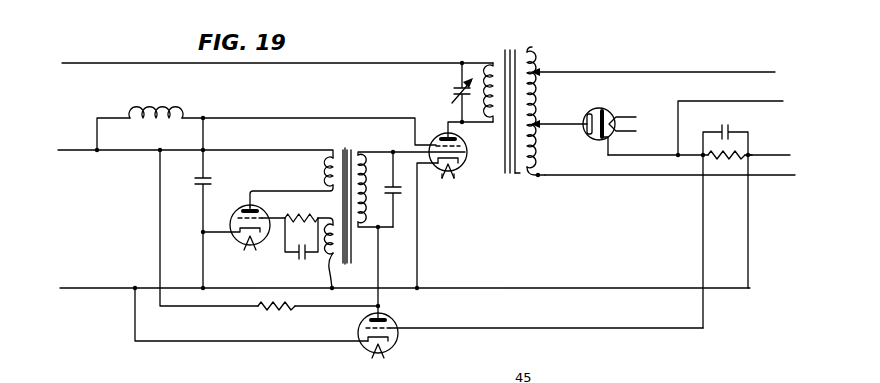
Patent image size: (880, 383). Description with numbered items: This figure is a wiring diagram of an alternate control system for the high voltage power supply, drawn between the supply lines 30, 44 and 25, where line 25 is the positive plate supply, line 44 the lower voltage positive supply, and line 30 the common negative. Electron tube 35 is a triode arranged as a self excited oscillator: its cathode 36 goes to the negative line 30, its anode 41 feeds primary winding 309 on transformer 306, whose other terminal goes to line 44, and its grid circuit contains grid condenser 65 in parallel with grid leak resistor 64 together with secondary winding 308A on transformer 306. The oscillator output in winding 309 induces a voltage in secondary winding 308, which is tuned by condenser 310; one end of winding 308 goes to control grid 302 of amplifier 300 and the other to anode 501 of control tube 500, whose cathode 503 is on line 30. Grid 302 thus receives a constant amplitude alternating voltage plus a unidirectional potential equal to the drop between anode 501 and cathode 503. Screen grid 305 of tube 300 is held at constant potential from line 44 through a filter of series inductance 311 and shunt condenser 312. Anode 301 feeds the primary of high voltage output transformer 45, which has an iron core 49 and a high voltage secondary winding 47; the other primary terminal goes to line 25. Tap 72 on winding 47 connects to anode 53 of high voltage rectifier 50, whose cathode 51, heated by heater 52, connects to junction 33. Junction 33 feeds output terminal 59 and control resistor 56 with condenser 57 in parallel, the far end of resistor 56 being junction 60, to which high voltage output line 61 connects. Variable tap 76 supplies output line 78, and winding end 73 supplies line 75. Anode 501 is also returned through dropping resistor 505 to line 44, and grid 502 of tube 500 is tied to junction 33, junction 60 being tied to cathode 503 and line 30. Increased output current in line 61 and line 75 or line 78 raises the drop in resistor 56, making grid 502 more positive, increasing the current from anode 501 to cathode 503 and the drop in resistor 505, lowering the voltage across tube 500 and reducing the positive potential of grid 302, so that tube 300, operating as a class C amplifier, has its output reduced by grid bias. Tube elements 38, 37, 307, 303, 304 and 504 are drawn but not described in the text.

The positive plate supply line 25 is at (70, 62).
The negative supply line 30 is at (65, 287).
The positive plate supply line 44 is at (62, 149).
The series inductance 311 is at (152, 113).
The shunt condenser 312 is at (201, 177).
The oscillator tube 38 is at (234, 216).
The anode 41 is at (247, 206).
The cathode 36 is at (238, 240).
The cathode 37 is at (247, 247).
The electron tube 35 is at (265, 246).
The grid leak resistor 64 is at (300, 217).
The grid condenser 65 is at (305, 259).
The primary winding 309 is at (327, 171).
The secondary winding 308A is at (333, 270).
The transformer core 307 is at (340, 151).
The transformer 306 is at (346, 150).
The secondary winding 308 is at (362, 170).
The condenser 310 is at (401, 193).
The amplifier 300 is at (434, 138).
The anode 301 is at (457, 139).
The screen grid 305 is at (467, 151).
The cathode 303 is at (443, 171).
The control grid 302 is at (456, 172).
The heater lead 304 is at (450, 176).
The high voltage output transformer 45 is at (509, 51).
The high voltage secondary winding 47 is at (533, 103).
The variable tap 76 is at (536, 64).
The line 78 is at (750, 72).
The tap 72 is at (540, 129).
The end of high voltage secondary winding 73 is at (541, 177).
The iron core 49 is at (517, 175).
The line 75 is at (776, 176).
The high voltage rectifier 50 is at (601, 108).
The anode 53 is at (587, 117).
The heater 52 is at (613, 114).
The cathode 51 is at (601, 139).
The junction 33 is at (676, 155).
The output terminal 59 is at (755, 102).
The control resistor 56 is at (733, 161).
The condenser 57 is at (722, 130).
The junction 60 is at (750, 155).
The high voltage output line 61 is at (780, 156).
The dropping resistor 505 is at (277, 312).
The control tube 500 is at (358, 326).
The anode 501 is at (390, 320).
The grid 502 is at (398, 327).
The cathode 503 is at (400, 339).
The heater filament 504 is at (368, 343).